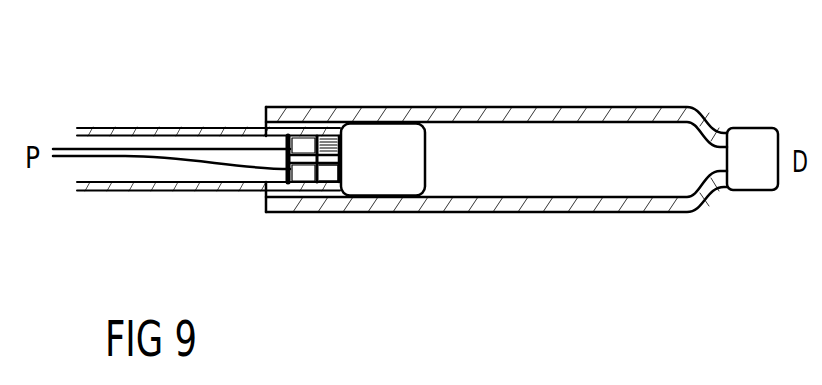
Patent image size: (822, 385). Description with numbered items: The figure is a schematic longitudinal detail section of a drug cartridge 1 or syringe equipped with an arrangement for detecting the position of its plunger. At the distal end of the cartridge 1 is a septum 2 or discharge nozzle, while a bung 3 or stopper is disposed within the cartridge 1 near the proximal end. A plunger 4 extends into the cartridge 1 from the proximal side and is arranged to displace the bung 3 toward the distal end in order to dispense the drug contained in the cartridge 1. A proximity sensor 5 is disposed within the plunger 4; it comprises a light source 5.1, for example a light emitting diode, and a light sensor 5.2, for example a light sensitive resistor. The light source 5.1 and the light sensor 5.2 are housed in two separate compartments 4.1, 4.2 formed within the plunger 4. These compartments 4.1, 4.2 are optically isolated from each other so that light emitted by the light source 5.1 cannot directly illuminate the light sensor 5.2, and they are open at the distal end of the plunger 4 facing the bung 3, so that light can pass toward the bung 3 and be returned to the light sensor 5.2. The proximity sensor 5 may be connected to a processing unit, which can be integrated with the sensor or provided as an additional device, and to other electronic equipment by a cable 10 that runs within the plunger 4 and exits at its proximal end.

The cartridge 1 is at (578, 113).
The septum 2 is at (757, 142).
The bung 3 is at (407, 132).
The plunger 4 is at (193, 127).
The compartment 4.1 is at (326, 145).
The compartment 4.2 is at (330, 177).
The proximity sensor 5 is at (286, 167).
The light source 5.1 is at (302, 147).
The light sensor 5.2 is at (302, 186).
The cable 10 is at (119, 151).